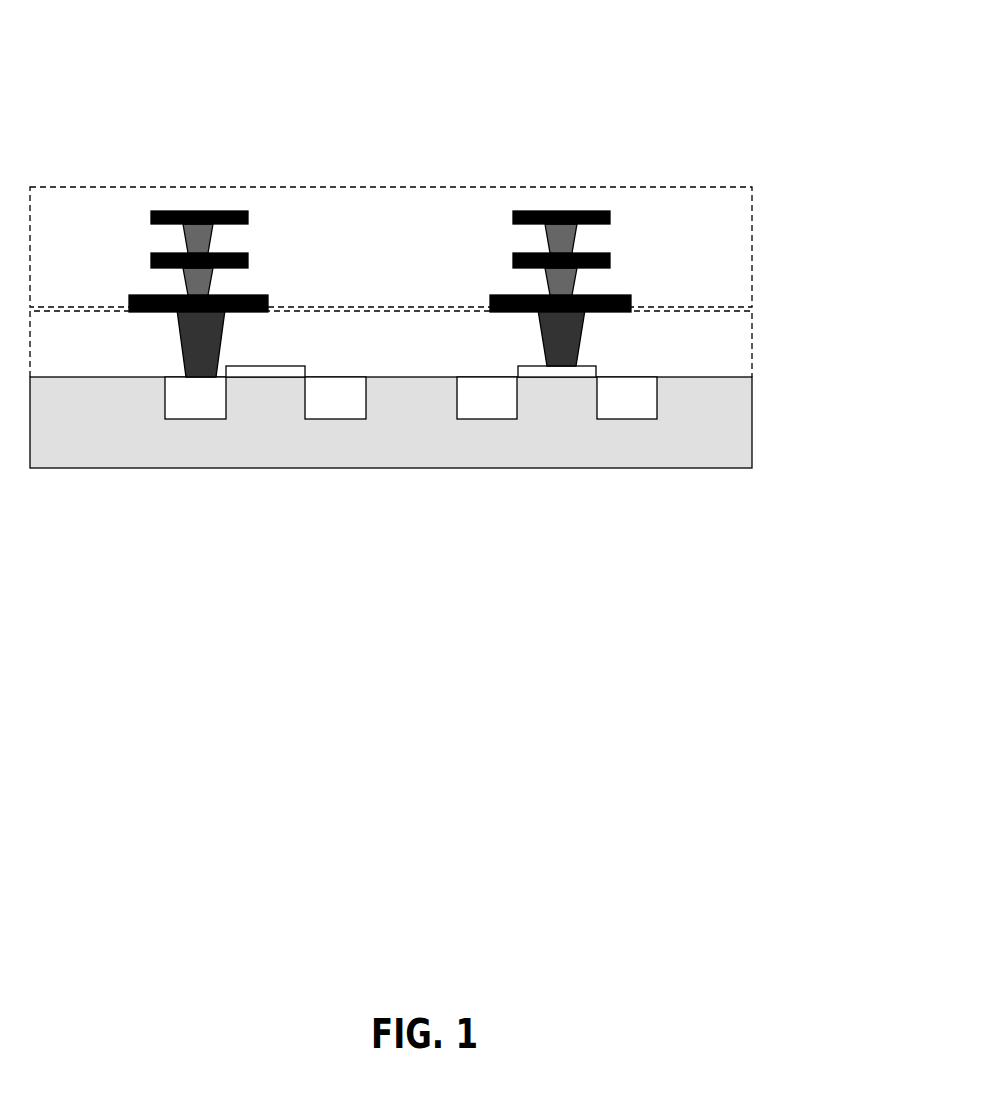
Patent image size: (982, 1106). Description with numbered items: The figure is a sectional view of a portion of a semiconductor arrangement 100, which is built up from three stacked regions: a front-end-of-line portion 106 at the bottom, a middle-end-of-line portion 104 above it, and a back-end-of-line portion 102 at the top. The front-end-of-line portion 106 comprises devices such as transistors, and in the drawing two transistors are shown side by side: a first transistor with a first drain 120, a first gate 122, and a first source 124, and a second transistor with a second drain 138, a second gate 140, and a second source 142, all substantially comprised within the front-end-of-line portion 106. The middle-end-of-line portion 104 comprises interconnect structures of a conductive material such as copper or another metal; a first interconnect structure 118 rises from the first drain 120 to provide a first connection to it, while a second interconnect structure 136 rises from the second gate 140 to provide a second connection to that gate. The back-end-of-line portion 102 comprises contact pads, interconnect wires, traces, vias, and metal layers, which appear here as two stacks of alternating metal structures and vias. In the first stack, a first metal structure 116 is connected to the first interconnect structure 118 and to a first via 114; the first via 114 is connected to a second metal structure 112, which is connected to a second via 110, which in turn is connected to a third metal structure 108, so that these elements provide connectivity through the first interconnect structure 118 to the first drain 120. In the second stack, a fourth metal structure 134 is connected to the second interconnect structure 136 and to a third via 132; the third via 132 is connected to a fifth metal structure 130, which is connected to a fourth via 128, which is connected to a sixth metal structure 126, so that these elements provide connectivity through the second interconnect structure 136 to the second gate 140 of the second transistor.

The semiconductor arrangement 100 is at (194, 67).
The back-end-of-line portion 102 is at (752, 240).
The middle-end-of-line portion 104 is at (752, 350).
The front-end-of-line portion 106 is at (752, 430).
The third metal structure 108 is at (247, 216).
The second via 110 is at (187, 246).
The second metal structure 112 is at (247, 254).
The first via 114 is at (187, 290).
The first metal structure 116 is at (267, 296).
The first interconnect structure 118 is at (221, 336).
The first drain 120 is at (174, 376).
The first gate 122 is at (258, 366).
The first source 124 is at (332, 376).
The sixth metal structure 126 is at (609, 216).
The fourth via 128 is at (548, 246).
The fifth metal structure 130 is at (609, 254).
The third via 132 is at (548, 290).
The fourth metal structure 134 is at (630, 296).
The second interconnect structure 136 is at (581, 336).
The second drain 138 is at (468, 376).
The second gate 140 is at (538, 365).
The second source 142 is at (642, 376).